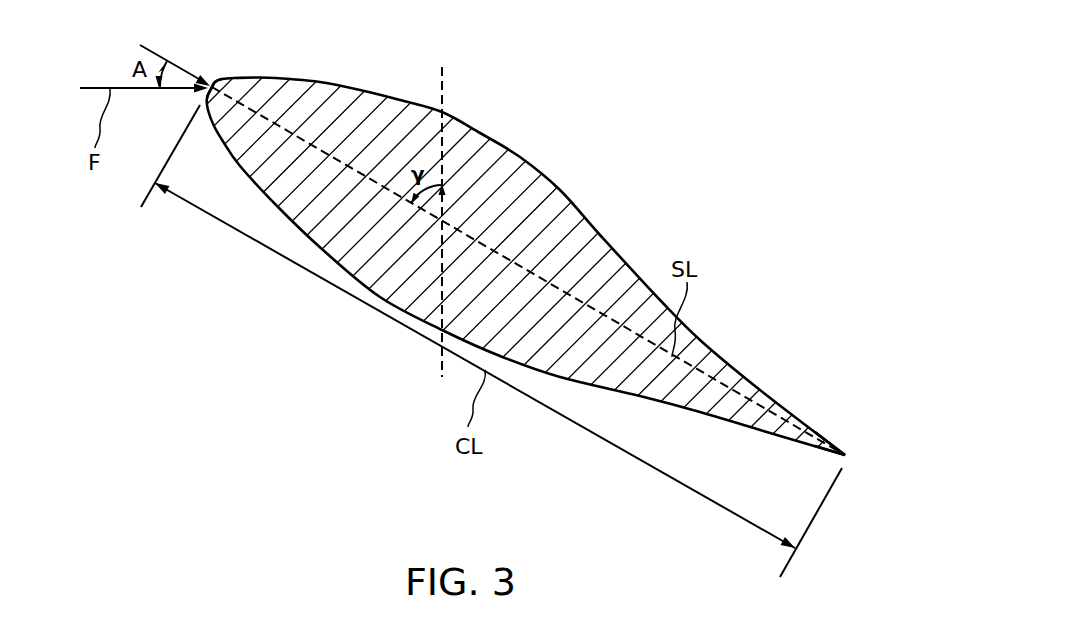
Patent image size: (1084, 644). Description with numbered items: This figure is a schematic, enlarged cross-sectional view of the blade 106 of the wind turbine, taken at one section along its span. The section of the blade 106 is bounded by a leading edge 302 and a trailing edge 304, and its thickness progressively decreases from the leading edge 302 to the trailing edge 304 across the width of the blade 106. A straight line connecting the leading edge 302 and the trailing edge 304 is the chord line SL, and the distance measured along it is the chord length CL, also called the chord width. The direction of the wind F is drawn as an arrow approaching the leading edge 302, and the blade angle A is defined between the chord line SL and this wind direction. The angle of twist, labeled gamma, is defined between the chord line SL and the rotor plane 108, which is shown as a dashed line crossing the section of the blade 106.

The blade 106 is at (711, 148).
The rotor plane 108 is at (445, 90).
The leading edge 302 is at (217, 81).
The trailing edge 304 is at (845, 452).